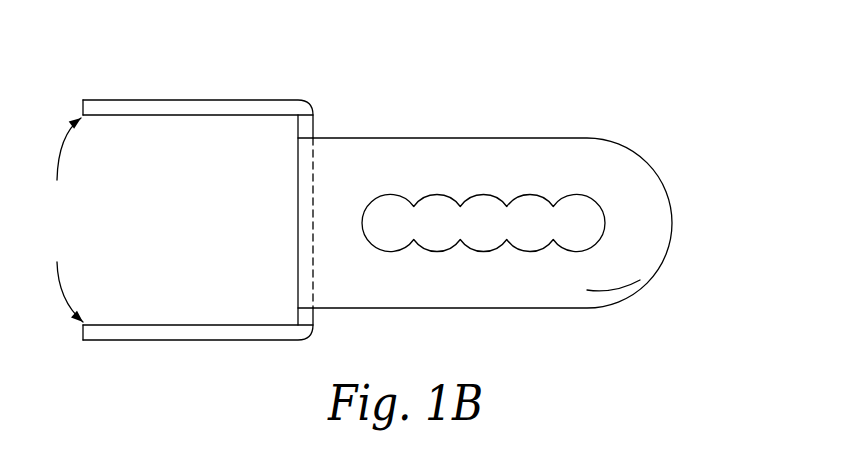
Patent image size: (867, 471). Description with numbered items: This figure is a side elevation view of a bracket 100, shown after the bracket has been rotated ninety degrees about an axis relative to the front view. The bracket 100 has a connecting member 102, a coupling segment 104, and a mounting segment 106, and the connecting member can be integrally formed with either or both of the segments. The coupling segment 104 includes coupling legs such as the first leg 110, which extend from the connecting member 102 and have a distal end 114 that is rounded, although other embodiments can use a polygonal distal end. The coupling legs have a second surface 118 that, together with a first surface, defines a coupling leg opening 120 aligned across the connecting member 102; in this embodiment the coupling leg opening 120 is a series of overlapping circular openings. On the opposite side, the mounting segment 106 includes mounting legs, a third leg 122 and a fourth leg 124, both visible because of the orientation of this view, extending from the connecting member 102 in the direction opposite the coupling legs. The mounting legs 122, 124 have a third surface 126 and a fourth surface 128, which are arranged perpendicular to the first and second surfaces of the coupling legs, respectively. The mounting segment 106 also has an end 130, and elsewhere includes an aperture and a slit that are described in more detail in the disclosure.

The bracket 100 is at (682, 92).
The connecting member 102 is at (298, 222).
The coupling segment 104 is at (665, 85).
The mounting segment 106 is at (292, 53).
The first leg 110 is at (646, 164).
The distal end 114 is at (653, 287).
The second surface 118 is at (454, 176).
The coupling leg opening 120 is at (605, 223).
The third leg 122 is at (108, 341).
The fourth leg 124 is at (127, 117).
The third surface 126 is at (207, 117).
The fourth surface 128 is at (170, 100).
The end 130 is at (59, 220).